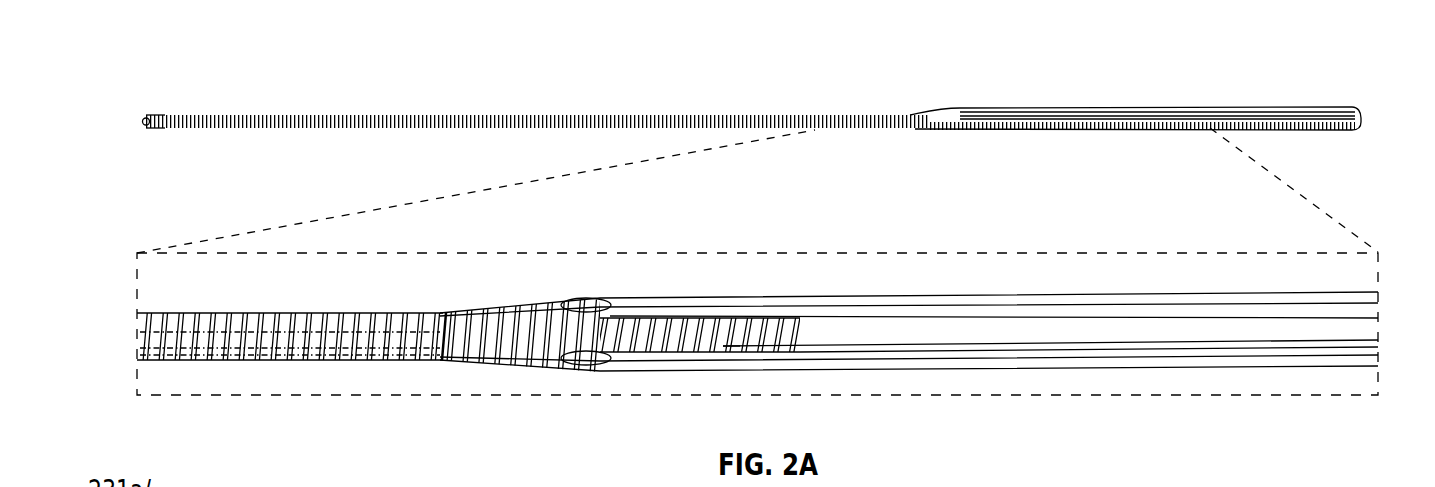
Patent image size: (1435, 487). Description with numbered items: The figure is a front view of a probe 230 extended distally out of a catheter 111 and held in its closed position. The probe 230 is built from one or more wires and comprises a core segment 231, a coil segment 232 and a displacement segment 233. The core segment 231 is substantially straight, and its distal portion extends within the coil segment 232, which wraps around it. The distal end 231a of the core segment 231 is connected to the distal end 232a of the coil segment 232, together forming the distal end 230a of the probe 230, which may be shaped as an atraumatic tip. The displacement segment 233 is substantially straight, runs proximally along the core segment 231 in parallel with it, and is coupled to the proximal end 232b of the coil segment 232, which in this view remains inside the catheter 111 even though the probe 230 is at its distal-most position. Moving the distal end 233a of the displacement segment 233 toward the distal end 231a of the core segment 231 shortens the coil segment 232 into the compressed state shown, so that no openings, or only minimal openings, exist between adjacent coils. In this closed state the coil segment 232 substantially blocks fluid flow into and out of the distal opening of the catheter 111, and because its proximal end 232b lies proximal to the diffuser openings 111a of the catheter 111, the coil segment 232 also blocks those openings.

The probe 230 is at (256, 62).
The distal end of probe 230a is at (138, 123).
The distal end of core segment 231a is at (149, 113).
The distal end of coil segment 232a is at (132, 85).
The catheter 111 is at (1133, 67).
The diffuser openings 111a is at (592, 300).
The core segment 231 is at (1065, 322).
The coil segment 232 is at (241, 362).
The proximal end of coil segment 232b is at (788, 322).
The displacement segment 233 is at (782, 360).
The distal end of displacement segment 233a is at (731, 362).